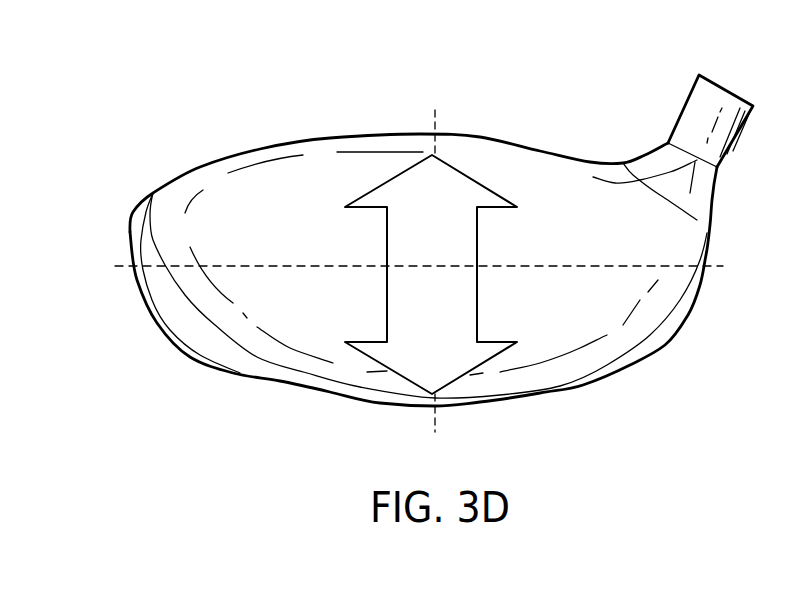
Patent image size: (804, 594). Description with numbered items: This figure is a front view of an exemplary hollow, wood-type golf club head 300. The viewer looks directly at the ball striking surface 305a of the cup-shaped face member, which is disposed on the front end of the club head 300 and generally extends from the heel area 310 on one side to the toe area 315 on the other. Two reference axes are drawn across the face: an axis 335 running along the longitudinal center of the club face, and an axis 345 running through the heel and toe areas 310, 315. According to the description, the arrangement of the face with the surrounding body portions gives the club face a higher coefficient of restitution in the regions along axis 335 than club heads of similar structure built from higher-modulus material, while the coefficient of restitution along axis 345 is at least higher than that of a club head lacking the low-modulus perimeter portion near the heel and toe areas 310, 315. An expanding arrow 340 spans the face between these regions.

The club head 300 is at (650, 135).
The ball striking surface 305a is at (327, 180).
The heel area 310 is at (725, 238).
The toe area 315 is at (112, 223).
The axis 335 is at (435, 275).
The expanding direction arrow 340 is at (431, 274).
The axis 345 is at (414, 269).